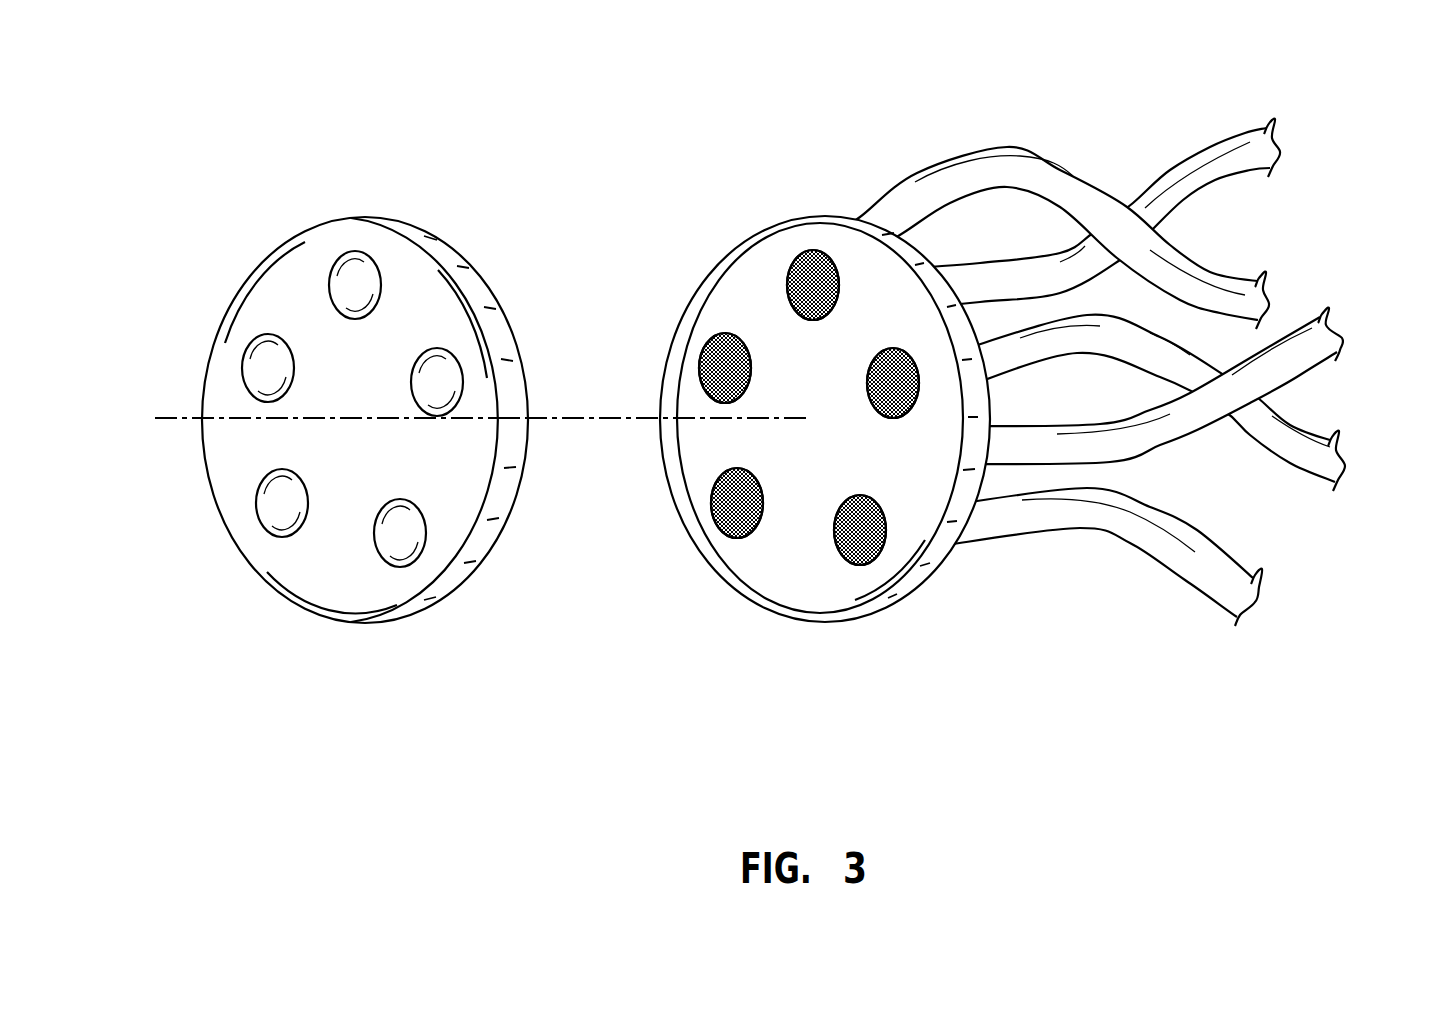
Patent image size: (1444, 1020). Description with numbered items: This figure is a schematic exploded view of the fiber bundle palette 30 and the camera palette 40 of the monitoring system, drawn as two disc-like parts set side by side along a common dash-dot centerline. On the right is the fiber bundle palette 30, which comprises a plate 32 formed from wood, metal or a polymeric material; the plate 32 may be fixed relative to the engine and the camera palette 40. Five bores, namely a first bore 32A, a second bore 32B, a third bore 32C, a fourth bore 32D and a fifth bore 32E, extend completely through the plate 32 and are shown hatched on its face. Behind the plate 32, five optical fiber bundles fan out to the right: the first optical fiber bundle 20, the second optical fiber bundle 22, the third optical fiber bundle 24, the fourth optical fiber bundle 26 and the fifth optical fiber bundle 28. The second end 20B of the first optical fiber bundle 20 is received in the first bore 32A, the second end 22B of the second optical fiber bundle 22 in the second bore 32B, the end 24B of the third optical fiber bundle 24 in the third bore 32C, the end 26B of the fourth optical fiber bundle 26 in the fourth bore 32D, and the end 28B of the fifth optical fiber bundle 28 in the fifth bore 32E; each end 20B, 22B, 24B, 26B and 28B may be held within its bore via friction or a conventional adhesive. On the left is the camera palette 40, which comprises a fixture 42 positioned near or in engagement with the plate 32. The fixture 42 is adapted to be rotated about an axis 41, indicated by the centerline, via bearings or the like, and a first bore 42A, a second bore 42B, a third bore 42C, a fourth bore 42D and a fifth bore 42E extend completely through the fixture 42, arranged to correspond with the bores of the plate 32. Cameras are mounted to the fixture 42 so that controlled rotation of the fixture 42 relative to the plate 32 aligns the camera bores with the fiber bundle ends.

The first optical fiber bundle 20 is at (995, 146).
The second optical fiber bundle 22 is at (1188, 152).
The third optical fiber bundle 24 is at (1305, 428).
The fourth optical fiber bundle 26 is at (1170, 452).
The fifth optical fiber bundle 28 is at (1080, 532).
The second end of the first optical fiber bundle 20B is at (702, 352).
The second end of the second optical fiber bundle 22B is at (808, 250).
The end of the third optical fiber bundle 24B is at (917, 385).
The end of the fourth optical fiber bundle 26B is at (713, 490).
The end of the fifth optical fiber bundle 28B is at (832, 540).
The fiber bundle palette 30 is at (885, 628).
The plate 32 is at (935, 598).
The first bore 32A is at (700, 388).
The second bore 32B is at (790, 277).
The third bore 32C is at (905, 348).
The fourth bore 32D is at (718, 515).
The fifth bore 32E is at (855, 560).
The camera palette 40 is at (455, 615).
The axis 41 is at (172, 418).
The fixture 42 is at (417, 610).
The first bore 42A is at (262, 337).
The second bore 42B is at (350, 252).
The third bore 42C is at (437, 348).
The fourth bore 42D is at (278, 537).
The fifth bore 42E is at (425, 545).